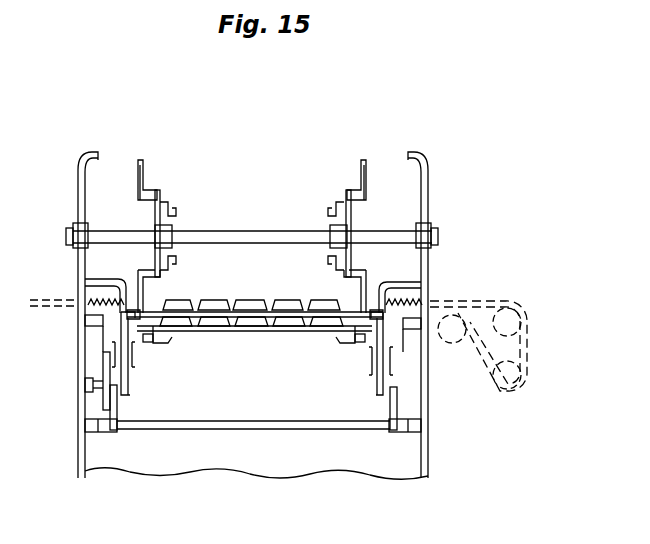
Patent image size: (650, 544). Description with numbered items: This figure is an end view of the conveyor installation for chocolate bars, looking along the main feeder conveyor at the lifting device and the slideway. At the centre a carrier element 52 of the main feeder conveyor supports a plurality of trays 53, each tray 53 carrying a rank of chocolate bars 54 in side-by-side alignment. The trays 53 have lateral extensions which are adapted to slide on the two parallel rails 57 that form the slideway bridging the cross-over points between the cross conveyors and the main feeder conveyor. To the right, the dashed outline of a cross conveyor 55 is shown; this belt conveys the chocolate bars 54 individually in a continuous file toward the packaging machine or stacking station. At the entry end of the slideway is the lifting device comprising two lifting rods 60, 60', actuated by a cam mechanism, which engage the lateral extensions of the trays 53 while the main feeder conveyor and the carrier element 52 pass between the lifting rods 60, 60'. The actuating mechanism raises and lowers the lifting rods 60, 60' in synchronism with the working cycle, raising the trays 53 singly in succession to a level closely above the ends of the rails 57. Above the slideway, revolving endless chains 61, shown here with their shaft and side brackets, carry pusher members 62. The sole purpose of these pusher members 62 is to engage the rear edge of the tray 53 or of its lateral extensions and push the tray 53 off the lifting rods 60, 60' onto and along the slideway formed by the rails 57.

The carrier element 52 is at (247, 328).
The tray 53 is at (280, 328).
The chocolate bars 54 is at (226, 326).
The cross conveyor 55 is at (498, 301).
The rails 57 is at (325, 306).
The lifting rod 60 is at (370, 371).
The lifting rod 60' is at (124, 371).
The revolving endless chain 61 is at (165, 202).
The pusher member 62 is at (140, 297).